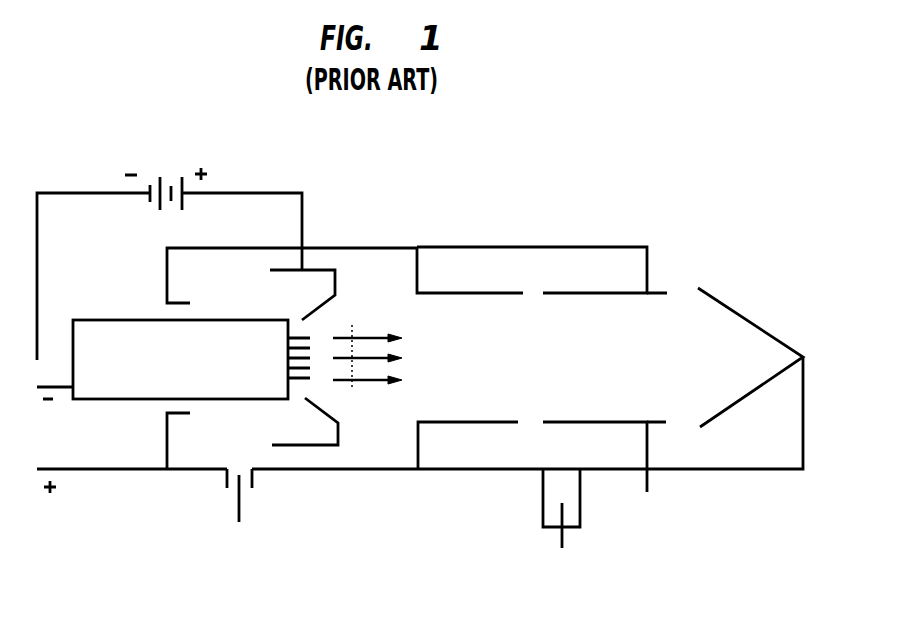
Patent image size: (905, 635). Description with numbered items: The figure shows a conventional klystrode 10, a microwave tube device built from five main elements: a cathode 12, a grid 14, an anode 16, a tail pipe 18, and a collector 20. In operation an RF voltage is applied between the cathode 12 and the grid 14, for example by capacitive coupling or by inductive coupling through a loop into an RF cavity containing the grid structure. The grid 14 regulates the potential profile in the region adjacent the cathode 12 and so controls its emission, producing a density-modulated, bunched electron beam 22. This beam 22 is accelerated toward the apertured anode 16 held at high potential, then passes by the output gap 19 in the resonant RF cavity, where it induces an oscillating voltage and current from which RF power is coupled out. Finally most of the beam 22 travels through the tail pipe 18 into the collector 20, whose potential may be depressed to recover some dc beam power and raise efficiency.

The klystrode 10 is at (712, 618).
The cathode 12 is at (100, 320).
The grid 14 is at (355, 331).
The anode 16 is at (472, 293).
The tail pipe 18 is at (660, 293).
The gap 19 is at (535, 422).
The collector 20 is at (728, 310).
The electron beam 22 is at (433, 325).